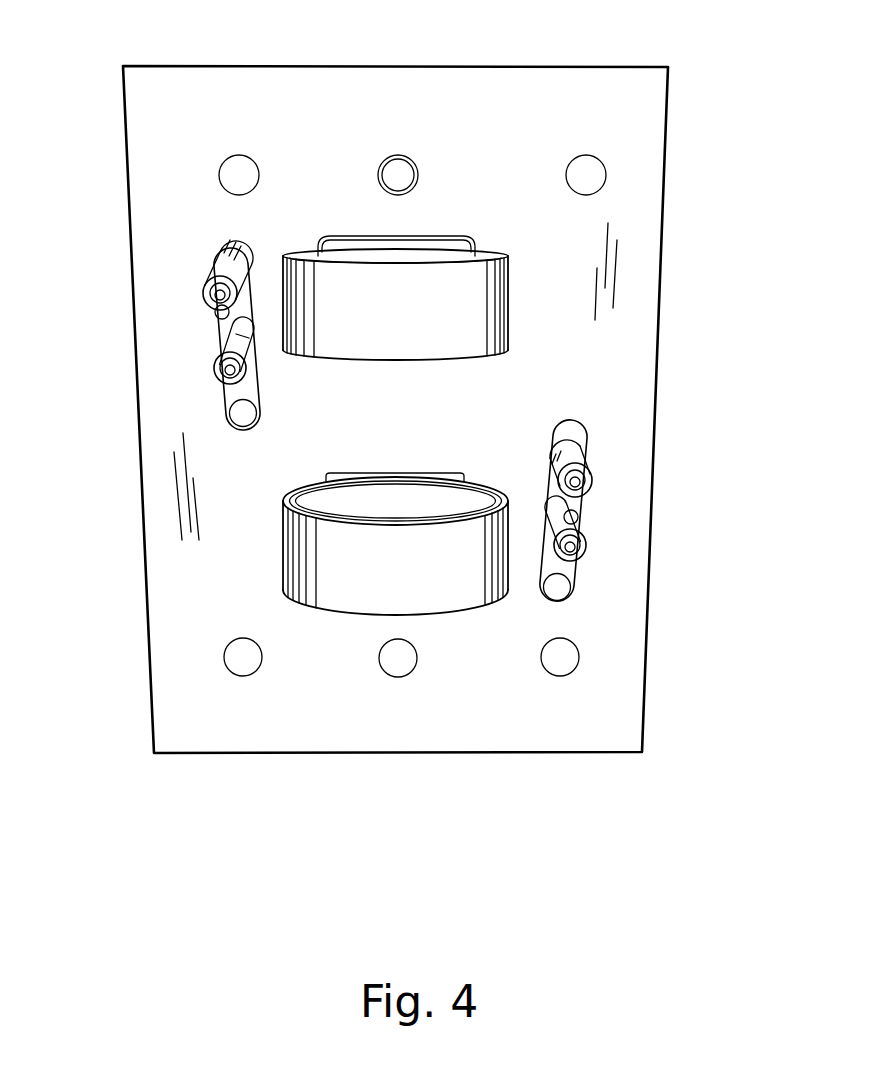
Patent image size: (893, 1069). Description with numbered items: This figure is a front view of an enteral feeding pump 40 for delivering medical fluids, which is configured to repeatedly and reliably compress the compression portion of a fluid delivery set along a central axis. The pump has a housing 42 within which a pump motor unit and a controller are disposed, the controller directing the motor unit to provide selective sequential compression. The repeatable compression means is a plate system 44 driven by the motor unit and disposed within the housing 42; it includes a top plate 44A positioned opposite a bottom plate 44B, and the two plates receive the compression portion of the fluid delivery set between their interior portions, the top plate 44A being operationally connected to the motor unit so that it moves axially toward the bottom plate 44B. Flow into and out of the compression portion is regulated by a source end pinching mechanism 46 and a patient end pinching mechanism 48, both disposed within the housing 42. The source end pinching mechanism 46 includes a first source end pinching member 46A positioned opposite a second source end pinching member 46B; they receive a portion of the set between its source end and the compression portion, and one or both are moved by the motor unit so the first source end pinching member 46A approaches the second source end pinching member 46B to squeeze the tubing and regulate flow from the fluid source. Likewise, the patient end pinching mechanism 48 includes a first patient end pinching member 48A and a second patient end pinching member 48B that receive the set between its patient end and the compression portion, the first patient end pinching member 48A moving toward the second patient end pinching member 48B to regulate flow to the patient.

The enteral feeding pump 40 is at (112, 609).
The housing 42 is at (628, 103).
The plate system 44 is at (522, 305).
The top plate 44A is at (462, 282).
The bottom plate 44B is at (462, 608).
The source end pinching mechanism 46 is at (190, 293).
The first source end pinching member 46A is at (217, 260).
The second source end pinching member 46B is at (215, 368).
The patient end pinching mechanism 48 is at (602, 491).
The first patient end pinching member 48A is at (587, 457).
The second patient end pinching member 48B is at (587, 548).